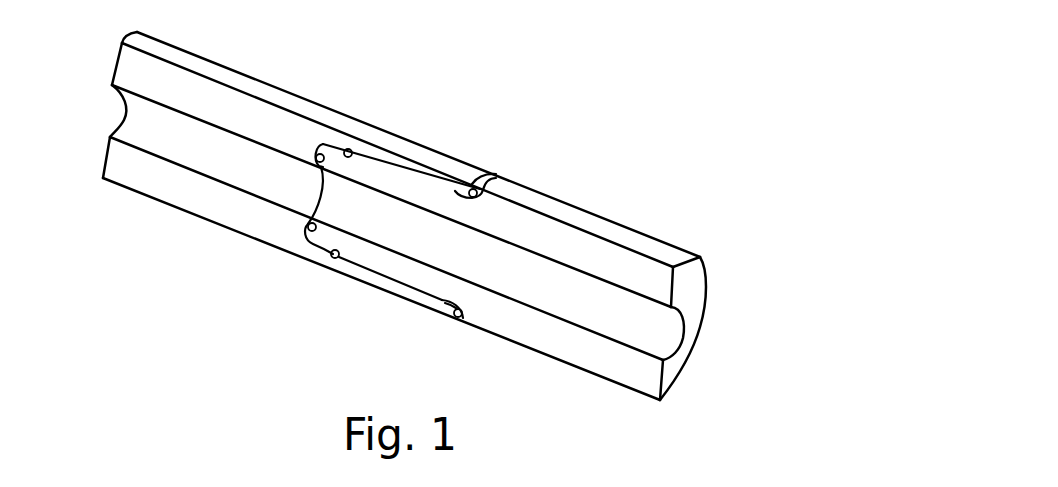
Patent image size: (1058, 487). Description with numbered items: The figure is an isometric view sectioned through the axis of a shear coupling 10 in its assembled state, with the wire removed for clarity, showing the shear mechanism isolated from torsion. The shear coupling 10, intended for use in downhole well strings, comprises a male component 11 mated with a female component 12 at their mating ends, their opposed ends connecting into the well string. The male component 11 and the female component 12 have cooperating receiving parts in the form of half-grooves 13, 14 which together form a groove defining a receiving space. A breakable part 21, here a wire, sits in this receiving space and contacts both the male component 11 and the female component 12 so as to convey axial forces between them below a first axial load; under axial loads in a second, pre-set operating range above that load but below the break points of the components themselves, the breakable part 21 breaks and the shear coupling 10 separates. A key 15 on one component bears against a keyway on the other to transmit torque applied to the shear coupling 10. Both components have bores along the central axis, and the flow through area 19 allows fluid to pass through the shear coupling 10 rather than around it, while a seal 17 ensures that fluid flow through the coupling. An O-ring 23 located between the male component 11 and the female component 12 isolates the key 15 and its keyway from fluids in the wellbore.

The shear coupling 10 is at (587, 86).
The male component 11 is at (563, 235).
The female component 12 is at (210, 200).
The half-groove 13 is at (347, 157).
The half-groove 14 is at (345, 150).
The key 15 is at (416, 192).
The seal 17 is at (308, 223).
The flow through area 19 is at (590, 313).
The breakable part 21 is at (352, 151).
The O-ring 23 is at (463, 320).